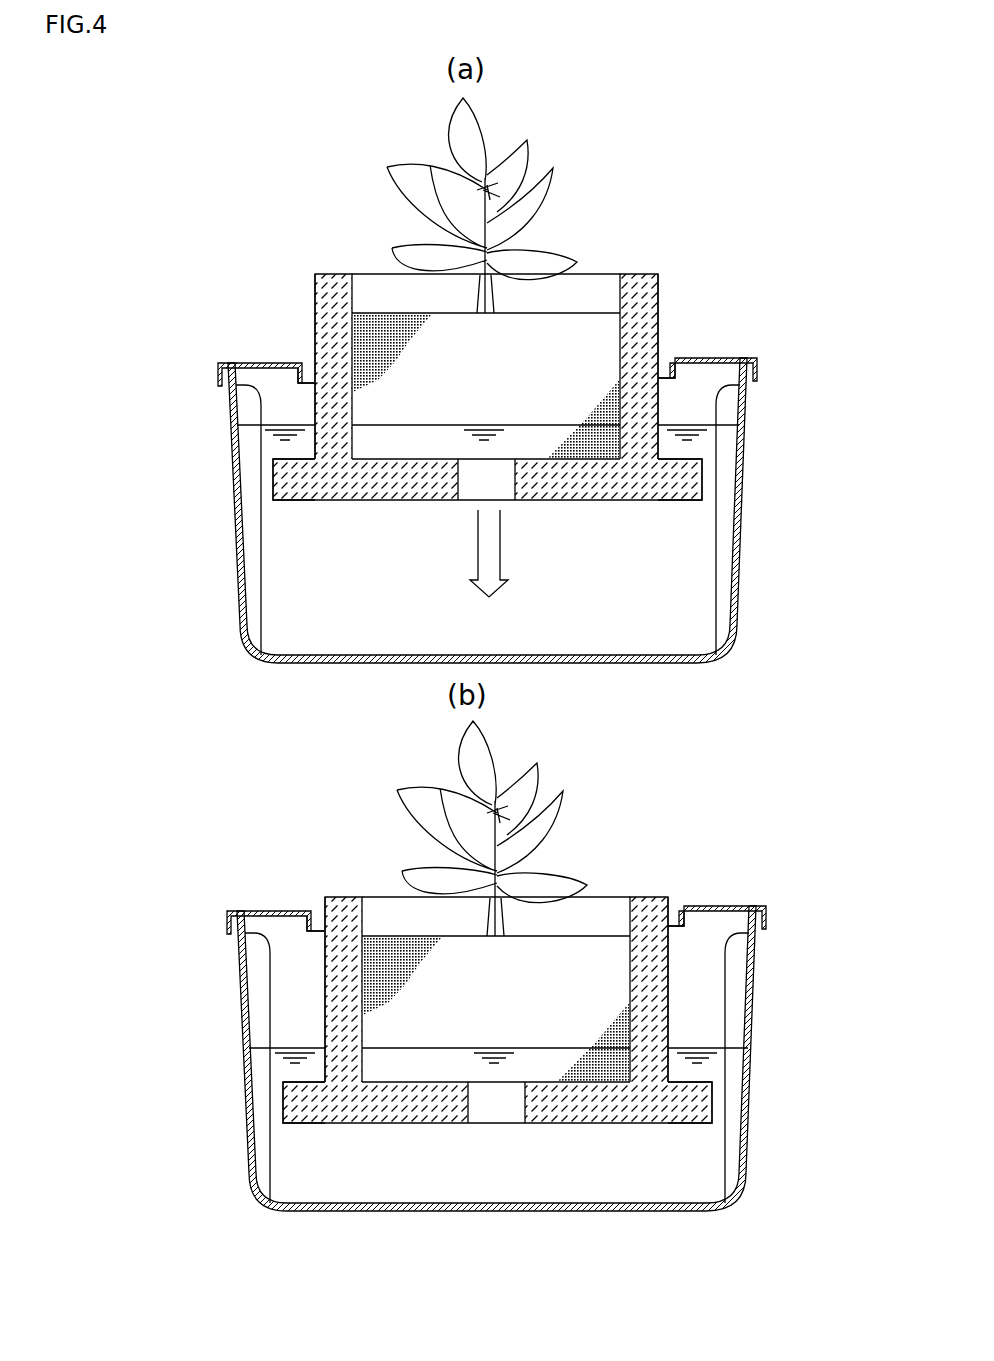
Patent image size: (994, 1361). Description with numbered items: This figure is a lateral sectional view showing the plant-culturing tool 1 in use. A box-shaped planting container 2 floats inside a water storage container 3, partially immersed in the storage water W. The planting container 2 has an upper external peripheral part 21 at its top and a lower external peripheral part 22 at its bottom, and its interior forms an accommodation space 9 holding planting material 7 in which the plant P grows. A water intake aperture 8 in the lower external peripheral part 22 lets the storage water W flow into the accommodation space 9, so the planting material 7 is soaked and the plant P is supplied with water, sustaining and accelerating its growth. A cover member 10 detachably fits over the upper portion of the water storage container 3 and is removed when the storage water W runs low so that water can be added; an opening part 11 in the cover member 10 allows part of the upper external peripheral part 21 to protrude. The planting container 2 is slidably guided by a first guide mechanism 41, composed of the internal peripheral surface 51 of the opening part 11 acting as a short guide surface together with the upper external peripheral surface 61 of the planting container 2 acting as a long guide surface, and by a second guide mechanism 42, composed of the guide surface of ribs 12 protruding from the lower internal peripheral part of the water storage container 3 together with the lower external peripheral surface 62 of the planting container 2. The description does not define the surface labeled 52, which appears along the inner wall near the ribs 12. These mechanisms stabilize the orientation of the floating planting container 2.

The plant-culturing tool 1 is at (222, 217).
The planting container 2 is at (413, 503).
The water storage container 3 is at (236, 456).
The planting material 7 is at (368, 312).
The water intake aperture 8 is at (505, 471).
The accommodation space 9 is at (595, 303).
The cover member 10 is at (263, 360).
The opening part 11 is at (303, 353).
The ribs 12 is at (243, 555).
The upper external peripheral part 21 is at (645, 273).
The lower external peripheral part 22 is at (565, 491).
The first guide mechanism 41 is at (674, 358).
The second guide mechanism 42 is at (722, 447).
The internal peripheral surface 51 is at (312, 383).
The inner partition wall of outer container 52 is at (265, 547).
The upper external peripheral surface 61 is at (313, 290).
The lower external peripheral surface 62 is at (272, 483).
The storage water W is at (445, 426).
The plant P is at (528, 159).